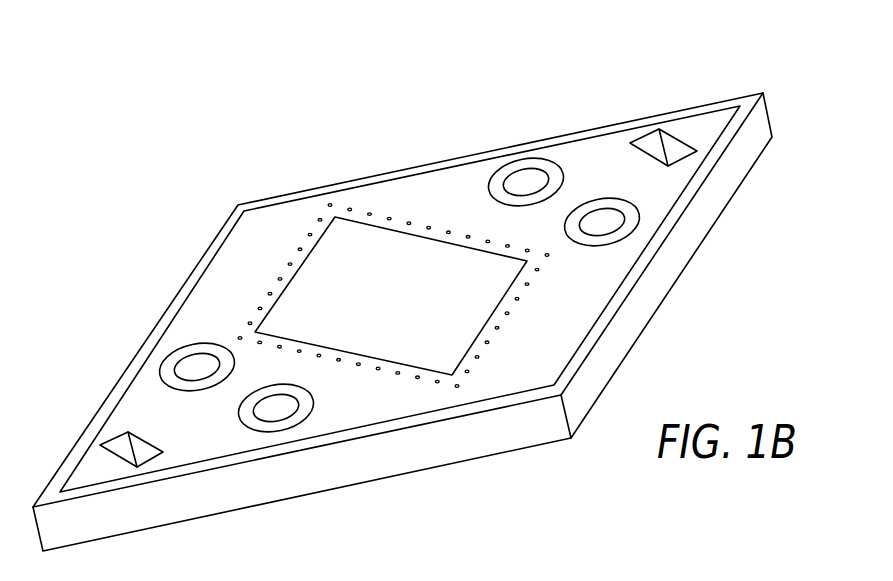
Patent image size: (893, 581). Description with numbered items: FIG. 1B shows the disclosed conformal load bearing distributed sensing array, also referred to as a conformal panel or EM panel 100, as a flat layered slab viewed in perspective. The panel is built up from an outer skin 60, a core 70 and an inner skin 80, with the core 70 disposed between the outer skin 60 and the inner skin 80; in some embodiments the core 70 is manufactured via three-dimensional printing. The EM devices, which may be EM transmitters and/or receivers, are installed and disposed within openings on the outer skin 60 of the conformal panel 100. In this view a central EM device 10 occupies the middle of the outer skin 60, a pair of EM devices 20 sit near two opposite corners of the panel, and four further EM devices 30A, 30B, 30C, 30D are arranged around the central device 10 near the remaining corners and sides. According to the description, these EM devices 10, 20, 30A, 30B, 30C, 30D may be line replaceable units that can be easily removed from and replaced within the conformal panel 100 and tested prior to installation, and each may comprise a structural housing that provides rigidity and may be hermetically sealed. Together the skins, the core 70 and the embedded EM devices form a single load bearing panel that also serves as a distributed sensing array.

The conformal load bearing distributed sensing array 100 is at (434, 289).
The EM device 10 is at (332, 265).
The EM device 20 is at (647, 136).
The EM device 30A is at (195, 367).
The EM device 30B is at (527, 183).
The EM device 30C is at (282, 407).
The EM device 30D is at (603, 222).
The outer skin 60 is at (712, 120).
The core 70 is at (772, 125).
The inner skin 80 is at (752, 167).